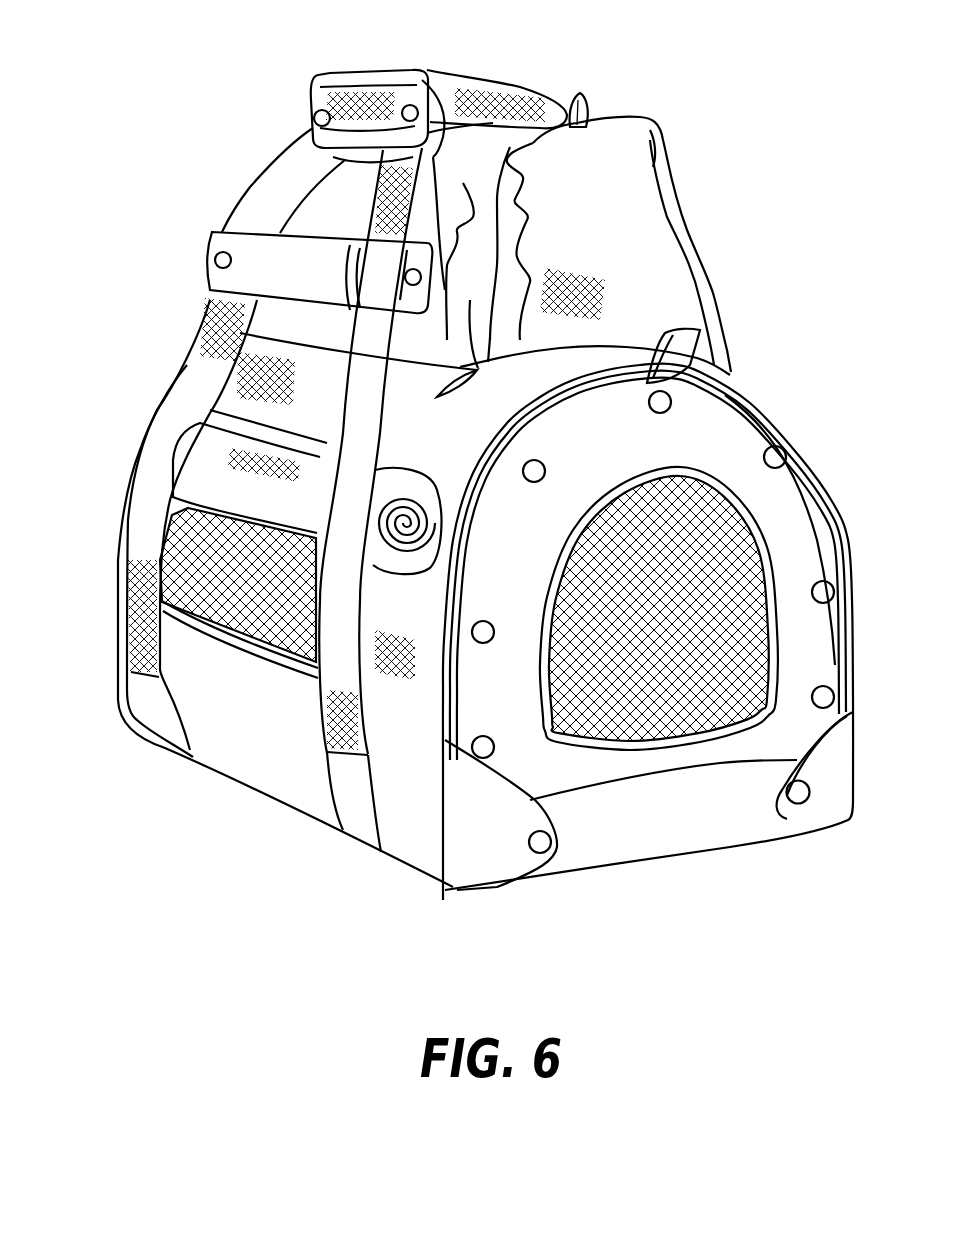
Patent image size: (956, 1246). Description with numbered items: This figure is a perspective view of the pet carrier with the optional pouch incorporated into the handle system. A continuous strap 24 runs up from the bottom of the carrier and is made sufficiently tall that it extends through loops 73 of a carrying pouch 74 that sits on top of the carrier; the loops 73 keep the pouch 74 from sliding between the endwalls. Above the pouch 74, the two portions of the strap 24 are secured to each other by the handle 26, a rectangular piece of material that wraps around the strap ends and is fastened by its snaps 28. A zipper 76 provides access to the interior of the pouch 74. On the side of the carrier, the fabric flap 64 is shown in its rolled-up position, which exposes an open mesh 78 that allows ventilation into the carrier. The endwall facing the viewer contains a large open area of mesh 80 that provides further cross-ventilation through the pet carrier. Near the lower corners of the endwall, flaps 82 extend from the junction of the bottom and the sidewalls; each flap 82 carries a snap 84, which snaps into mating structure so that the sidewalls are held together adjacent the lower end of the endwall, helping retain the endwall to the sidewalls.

The continuous strap 24 is at (312, 720).
The handle 26 is at (363, 88).
The snaps 28 is at (313, 118).
The fabric flap 64 is at (233, 473).
The loops 73 is at (293, 260).
The carrying pouch 74 is at (673, 262).
The zipper 76 is at (585, 97).
The open mesh 78 is at (240, 600).
The open area mesh 80 is at (717, 677).
The flaps 82 is at (483, 826).
The snap 84 is at (540, 842).